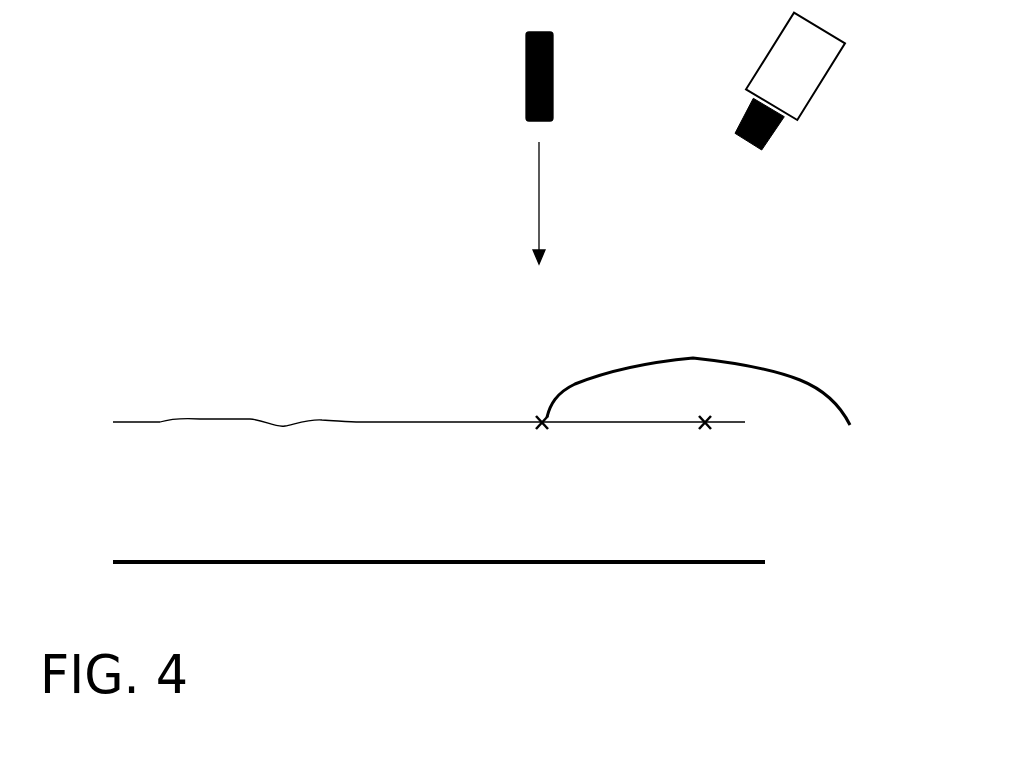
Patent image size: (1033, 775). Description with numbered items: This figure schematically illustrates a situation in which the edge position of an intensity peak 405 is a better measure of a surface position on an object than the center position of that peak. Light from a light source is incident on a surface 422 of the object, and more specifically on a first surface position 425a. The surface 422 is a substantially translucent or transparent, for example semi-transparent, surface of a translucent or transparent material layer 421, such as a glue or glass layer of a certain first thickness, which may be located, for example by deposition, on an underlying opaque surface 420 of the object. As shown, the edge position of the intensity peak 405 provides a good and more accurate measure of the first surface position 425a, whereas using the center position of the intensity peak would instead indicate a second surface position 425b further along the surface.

The intensity peak 405 is at (771, 323).
The underlying opaque surface 420 is at (178, 553).
The translucent or transparent material layer 421 is at (412, 497).
The surface 422 is at (360, 413).
The first surface position 425a is at (547, 444).
The second surface position 425b is at (722, 443).